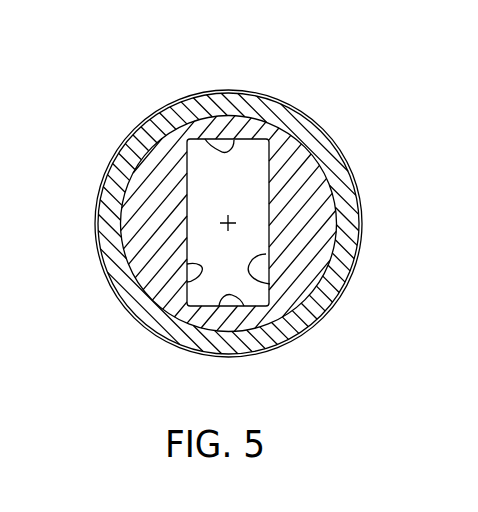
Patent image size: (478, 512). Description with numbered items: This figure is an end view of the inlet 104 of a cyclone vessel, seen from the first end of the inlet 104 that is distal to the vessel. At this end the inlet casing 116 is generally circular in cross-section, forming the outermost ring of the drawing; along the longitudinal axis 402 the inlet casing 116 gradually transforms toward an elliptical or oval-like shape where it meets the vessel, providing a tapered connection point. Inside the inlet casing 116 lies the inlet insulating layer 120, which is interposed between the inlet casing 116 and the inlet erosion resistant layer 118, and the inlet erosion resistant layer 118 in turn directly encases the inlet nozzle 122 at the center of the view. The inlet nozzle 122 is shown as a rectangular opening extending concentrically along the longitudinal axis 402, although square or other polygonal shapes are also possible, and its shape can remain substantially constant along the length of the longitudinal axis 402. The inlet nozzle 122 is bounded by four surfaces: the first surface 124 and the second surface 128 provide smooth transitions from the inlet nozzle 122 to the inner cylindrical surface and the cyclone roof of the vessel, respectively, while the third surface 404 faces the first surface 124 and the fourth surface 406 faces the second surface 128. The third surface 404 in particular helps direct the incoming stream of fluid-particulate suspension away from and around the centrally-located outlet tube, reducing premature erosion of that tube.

The inlet 104 is at (405, 126).
The inlet casing 116 is at (316, 122).
The inlet erosion resistant layer 118 is at (317, 246).
The inlet insulating layer 120 is at (172, 118).
The inlet nozzle 122 is at (212, 197).
The first surface 124 is at (187, 264).
The second surface 128 is at (234, 140).
The longitudinal axis 402 is at (234, 221).
The third surface 404 is at (270, 284).
The fourth surface 406 is at (219, 306).